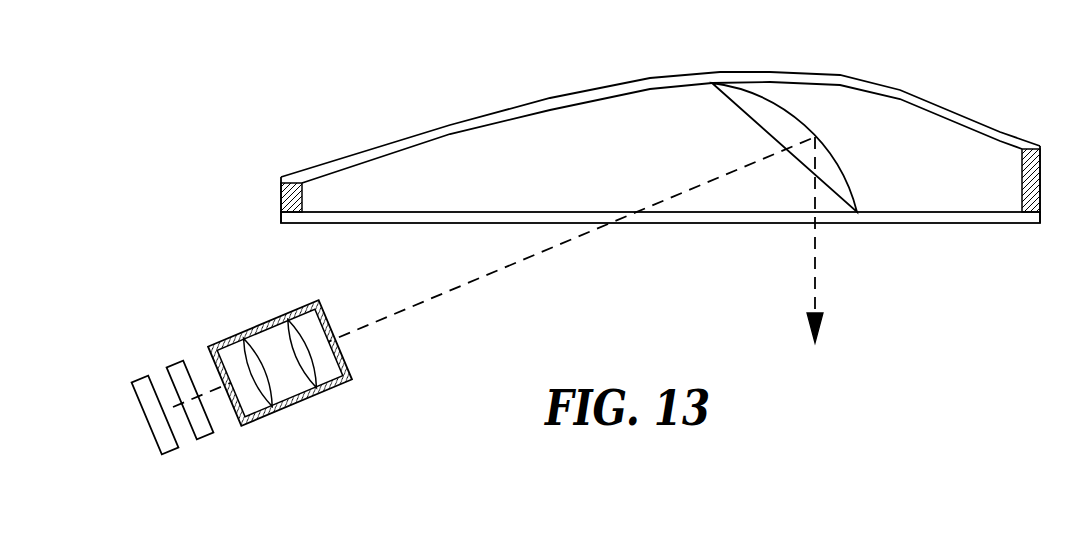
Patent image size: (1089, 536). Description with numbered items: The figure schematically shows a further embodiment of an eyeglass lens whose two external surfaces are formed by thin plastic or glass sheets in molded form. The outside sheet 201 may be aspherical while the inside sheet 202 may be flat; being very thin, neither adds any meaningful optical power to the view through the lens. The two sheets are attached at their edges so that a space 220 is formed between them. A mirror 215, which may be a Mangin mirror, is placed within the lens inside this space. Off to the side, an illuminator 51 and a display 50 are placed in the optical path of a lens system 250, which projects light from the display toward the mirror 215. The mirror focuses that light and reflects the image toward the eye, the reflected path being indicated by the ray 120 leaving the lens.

The outside sheet 201 is at (940, 102).
The inside sheet 202 is at (979, 222).
The space 220 is at (907, 167).
The mirror 215 is at (790, 110).
The ray 120 is at (812, 281).
The lens system 250 is at (270, 332).
The display 50 is at (175, 364).
The illuminator 51 is at (140, 379).